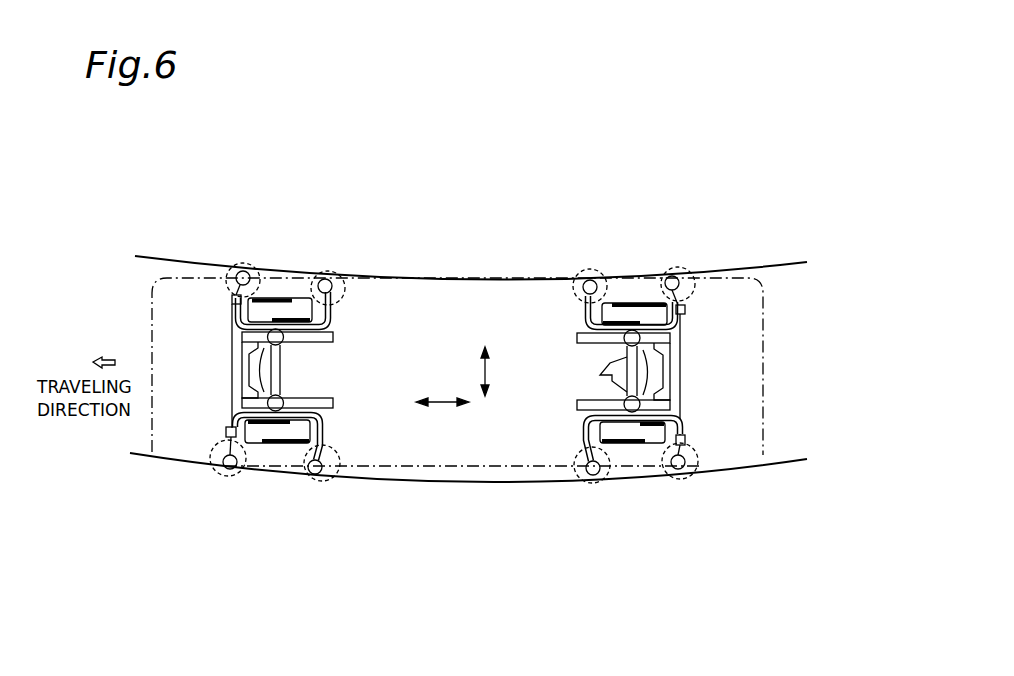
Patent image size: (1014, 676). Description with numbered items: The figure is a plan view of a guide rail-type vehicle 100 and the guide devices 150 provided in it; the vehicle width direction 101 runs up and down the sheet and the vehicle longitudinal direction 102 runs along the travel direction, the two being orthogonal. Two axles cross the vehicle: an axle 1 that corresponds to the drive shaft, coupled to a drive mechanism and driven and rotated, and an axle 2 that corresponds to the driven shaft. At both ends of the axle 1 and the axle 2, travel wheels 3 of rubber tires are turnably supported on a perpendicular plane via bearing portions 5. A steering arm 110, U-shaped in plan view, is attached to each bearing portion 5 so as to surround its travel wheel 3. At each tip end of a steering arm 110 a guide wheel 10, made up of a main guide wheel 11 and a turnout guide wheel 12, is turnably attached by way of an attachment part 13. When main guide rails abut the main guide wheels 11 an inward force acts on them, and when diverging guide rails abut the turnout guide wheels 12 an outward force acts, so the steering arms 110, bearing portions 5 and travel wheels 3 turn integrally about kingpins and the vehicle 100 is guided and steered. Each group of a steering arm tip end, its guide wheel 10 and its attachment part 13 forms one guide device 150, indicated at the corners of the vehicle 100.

The axle 1 is at (603, 378).
The axle 2 is at (286, 374).
The travel wheel 3 is at (297, 309).
The bearing portion 5 is at (273, 326).
The guide wheel 10 is at (203, 192).
The main guide wheel 11 is at (460, 368).
The turnout guide wheel 12 is at (241, 270).
The attachment part 13 is at (218, 272).
The guide rail-type vehicle 100 is at (467, 477).
The vehicle width direction 101 is at (490, 373).
The vehicle longitudinal direction 102 is at (445, 396).
The steering arm 110 is at (333, 322).
The guide device 150 is at (368, 306).